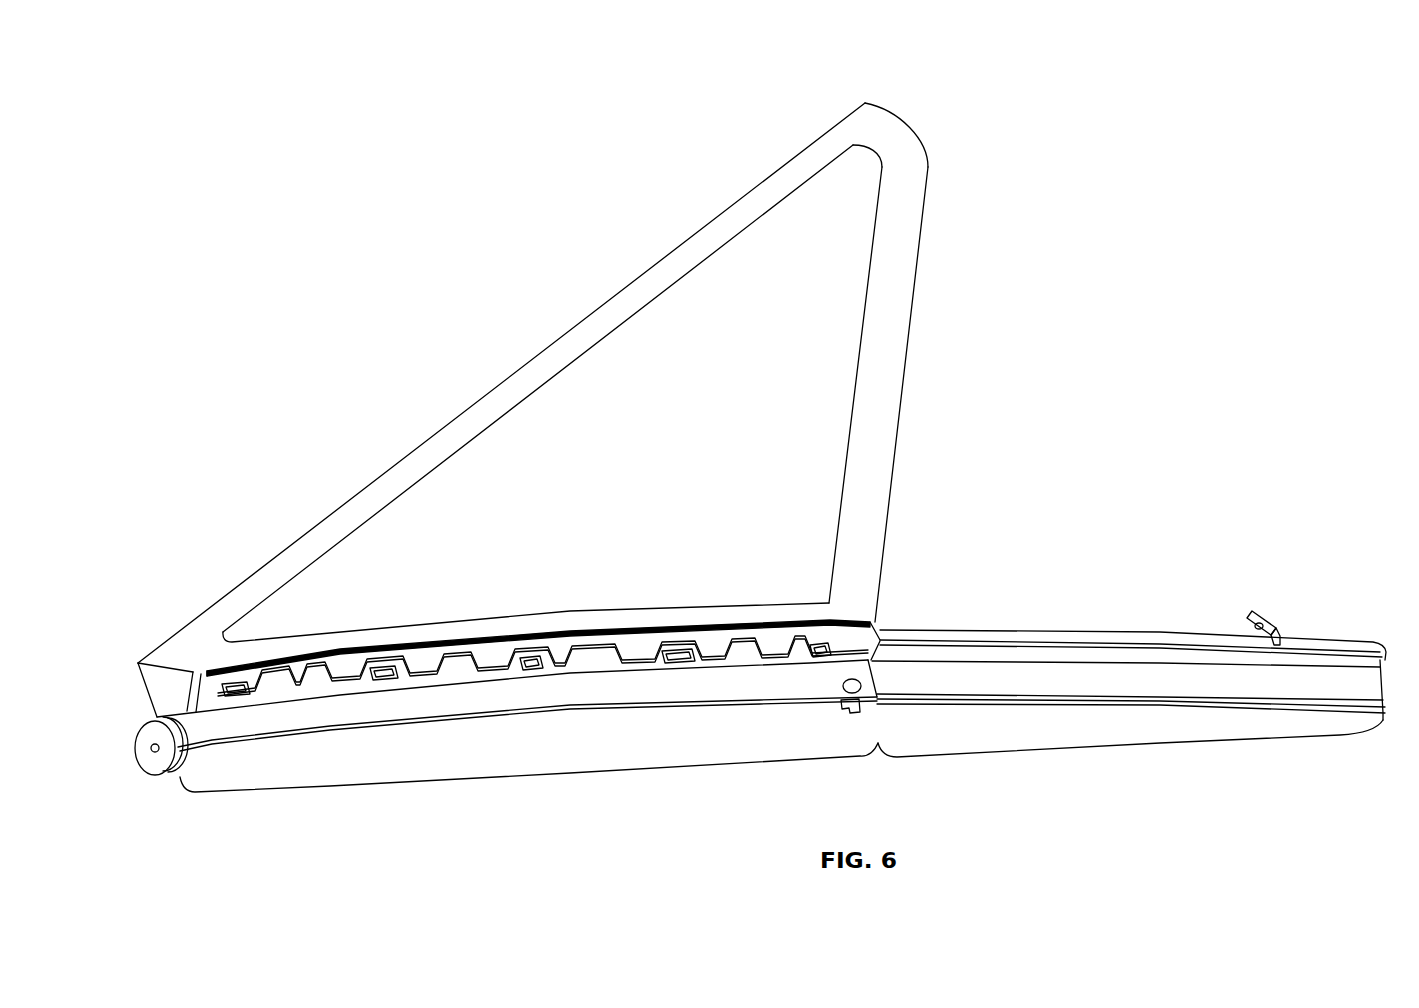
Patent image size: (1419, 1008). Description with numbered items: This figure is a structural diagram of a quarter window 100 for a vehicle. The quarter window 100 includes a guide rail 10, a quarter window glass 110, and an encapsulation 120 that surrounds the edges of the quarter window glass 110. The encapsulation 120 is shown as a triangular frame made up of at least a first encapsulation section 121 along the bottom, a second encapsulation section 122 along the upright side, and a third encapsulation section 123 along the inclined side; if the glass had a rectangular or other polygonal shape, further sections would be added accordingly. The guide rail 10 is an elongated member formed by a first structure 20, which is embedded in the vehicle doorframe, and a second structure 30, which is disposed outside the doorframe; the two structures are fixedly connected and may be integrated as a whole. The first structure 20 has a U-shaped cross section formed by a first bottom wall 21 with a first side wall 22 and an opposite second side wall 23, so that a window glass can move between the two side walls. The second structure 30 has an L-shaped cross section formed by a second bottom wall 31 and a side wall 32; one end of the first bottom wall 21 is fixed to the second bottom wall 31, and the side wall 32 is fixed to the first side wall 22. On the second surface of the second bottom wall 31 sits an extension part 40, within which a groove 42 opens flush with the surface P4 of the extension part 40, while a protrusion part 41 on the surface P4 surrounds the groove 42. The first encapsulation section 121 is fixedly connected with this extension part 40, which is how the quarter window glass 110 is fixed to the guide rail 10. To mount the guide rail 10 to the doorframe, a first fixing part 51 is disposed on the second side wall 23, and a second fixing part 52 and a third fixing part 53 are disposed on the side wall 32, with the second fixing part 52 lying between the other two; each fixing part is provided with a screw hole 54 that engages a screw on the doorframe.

The quarter window 100 is at (912, 89).
The quarter window glass 110 is at (862, 210).
The encapsulation 120 is at (905, 369).
The first encapsulation section 121 is at (580, 617).
The second encapsulation section 122 is at (883, 425).
The third encapsulation section 123 is at (602, 317).
The guide rail 10 is at (1143, 606).
The first structure 20 is at (1103, 747).
The first bottom wall 21 is at (1365, 667).
The first side wall 22 is at (1367, 694).
The second side wall 23 is at (1373, 646).
The second structure 30 is at (603, 770).
The second bottom wall 31 is at (333, 693).
The side wall 32 is at (210, 738).
The extension part 40 is at (195, 673).
The protrusion part 41 is at (238, 668).
The groove 42 is at (340, 663).
The first fixing part 51 is at (1272, 631).
The second fixing part 52 is at (850, 714).
The third fixing part 53 is at (162, 762).
The screw hole 54 is at (152, 749).
The surface of the extension part P4 is at (156, 661).